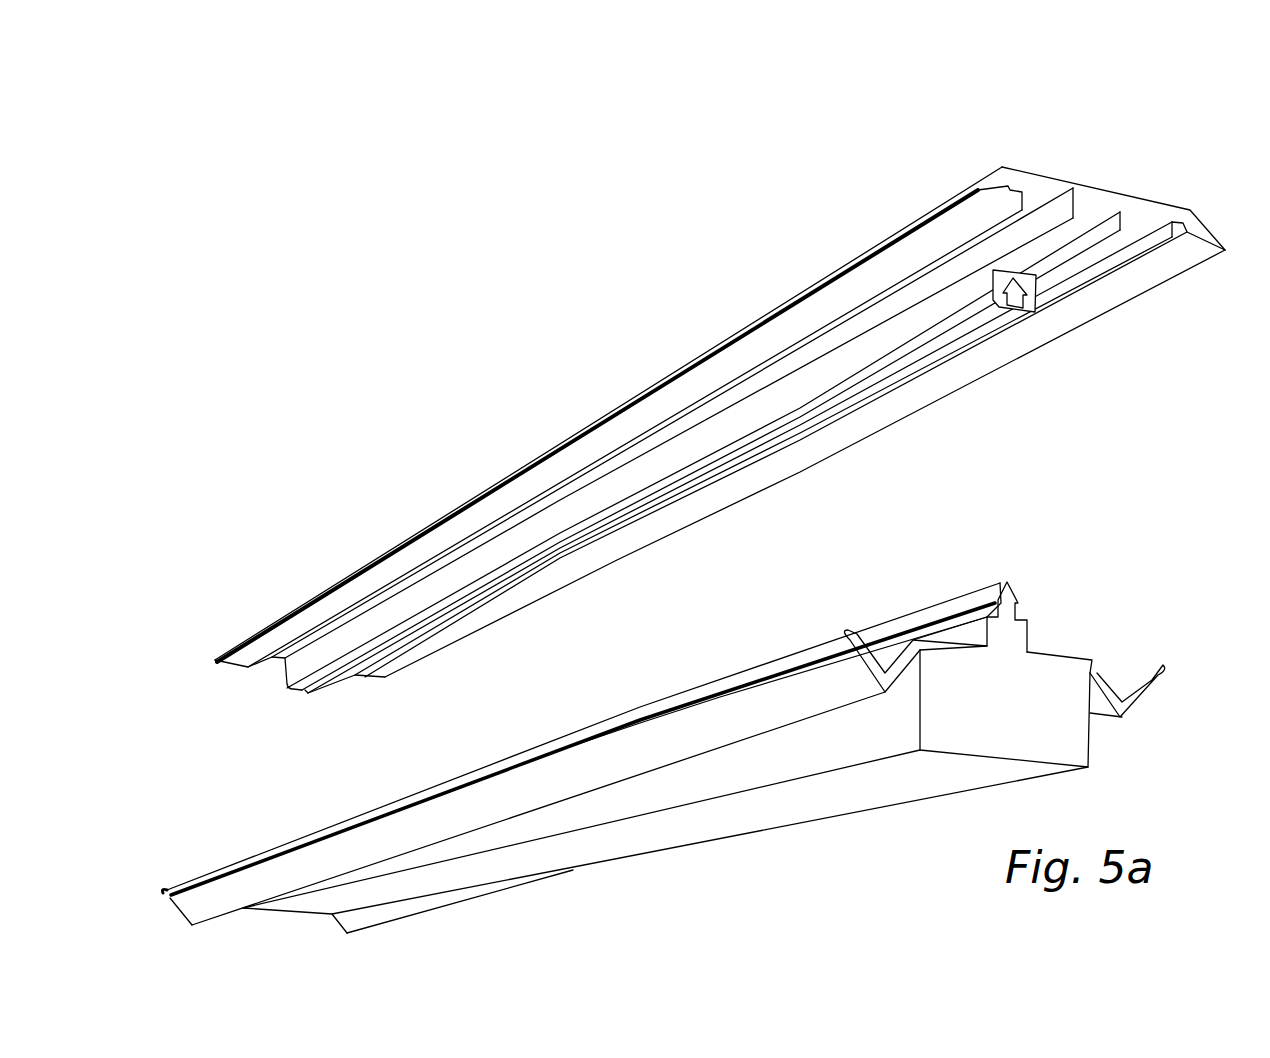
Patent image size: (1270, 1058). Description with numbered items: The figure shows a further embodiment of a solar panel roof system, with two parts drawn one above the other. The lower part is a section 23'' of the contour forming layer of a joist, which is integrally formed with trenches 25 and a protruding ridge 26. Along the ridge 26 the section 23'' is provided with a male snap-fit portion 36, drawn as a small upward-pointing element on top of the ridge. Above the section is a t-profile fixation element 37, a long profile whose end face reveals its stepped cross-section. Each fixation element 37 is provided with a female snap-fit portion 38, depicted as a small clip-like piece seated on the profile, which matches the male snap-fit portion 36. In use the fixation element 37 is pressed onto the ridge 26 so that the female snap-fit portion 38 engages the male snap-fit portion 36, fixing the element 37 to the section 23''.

The t-profile fixation element 37 is at (1133, 170).
The female snap-fit portion 38 is at (1013, 284).
The section 23'' is at (702, 690).
The male snap-fit portion 36 is at (947, 597).
The protruding ridge 26 is at (1028, 627).
The trenches 25 is at (1072, 606).